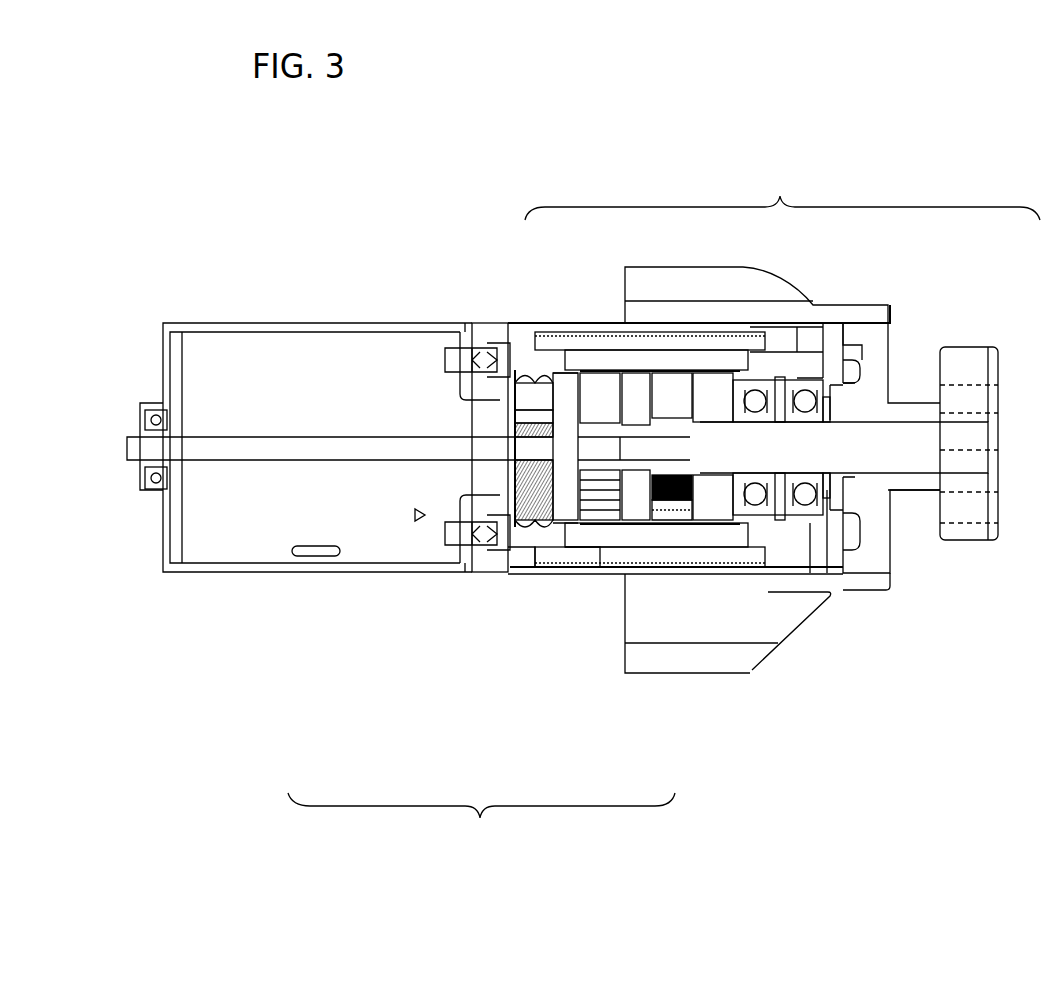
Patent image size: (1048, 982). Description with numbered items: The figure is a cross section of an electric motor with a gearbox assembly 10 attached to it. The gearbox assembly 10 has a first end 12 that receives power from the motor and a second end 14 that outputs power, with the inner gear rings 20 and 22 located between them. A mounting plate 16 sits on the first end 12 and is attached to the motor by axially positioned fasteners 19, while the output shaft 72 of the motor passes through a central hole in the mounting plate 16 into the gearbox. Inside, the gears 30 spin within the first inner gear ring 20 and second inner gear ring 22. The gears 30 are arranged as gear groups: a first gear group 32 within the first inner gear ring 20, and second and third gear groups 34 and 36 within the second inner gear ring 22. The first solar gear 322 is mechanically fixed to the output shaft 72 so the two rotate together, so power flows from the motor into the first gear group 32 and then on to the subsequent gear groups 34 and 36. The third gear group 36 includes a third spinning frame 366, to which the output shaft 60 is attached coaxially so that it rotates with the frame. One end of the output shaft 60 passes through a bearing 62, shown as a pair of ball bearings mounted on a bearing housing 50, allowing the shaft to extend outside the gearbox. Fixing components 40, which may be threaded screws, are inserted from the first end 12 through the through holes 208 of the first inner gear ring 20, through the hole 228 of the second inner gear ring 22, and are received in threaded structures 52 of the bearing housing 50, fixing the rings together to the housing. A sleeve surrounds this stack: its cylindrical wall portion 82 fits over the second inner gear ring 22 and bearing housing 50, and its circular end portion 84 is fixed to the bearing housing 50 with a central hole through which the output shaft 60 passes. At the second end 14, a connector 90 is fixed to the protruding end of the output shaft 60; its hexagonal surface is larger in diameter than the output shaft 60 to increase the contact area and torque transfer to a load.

The gearbox assembly 10 is at (782, 194).
The first end 12 is at (520, 340).
The second end 14 is at (1000, 378).
The mounting plate 16 is at (497, 330).
The fasteners 19 is at (468, 340).
The first inner gear ring 20 is at (550, 330).
The second inner gear ring 22 is at (600, 330).
The gears 30 is at (481, 825).
The first gear group 32 is at (433, 673).
The first solar gear 322 is at (530, 520).
The second gear group 34 is at (600, 500).
The third gear group 36 is at (680, 520).
The third spinning frame 366 is at (715, 490).
The fixing components 40 is at (565, 543).
The bearing housing 50 is at (797, 533).
The structures 52 is at (770, 563).
The output shaft 60 is at (873, 447).
The bearing 62 is at (813, 507).
The output shaft of motor 72 is at (218, 442).
The cylindrical wall portion 82 is at (826, 313).
The end portion 84 is at (845, 347).
The connector 90 is at (968, 505).
The through holes 208 is at (527, 518).
The through hole 228 is at (585, 550).